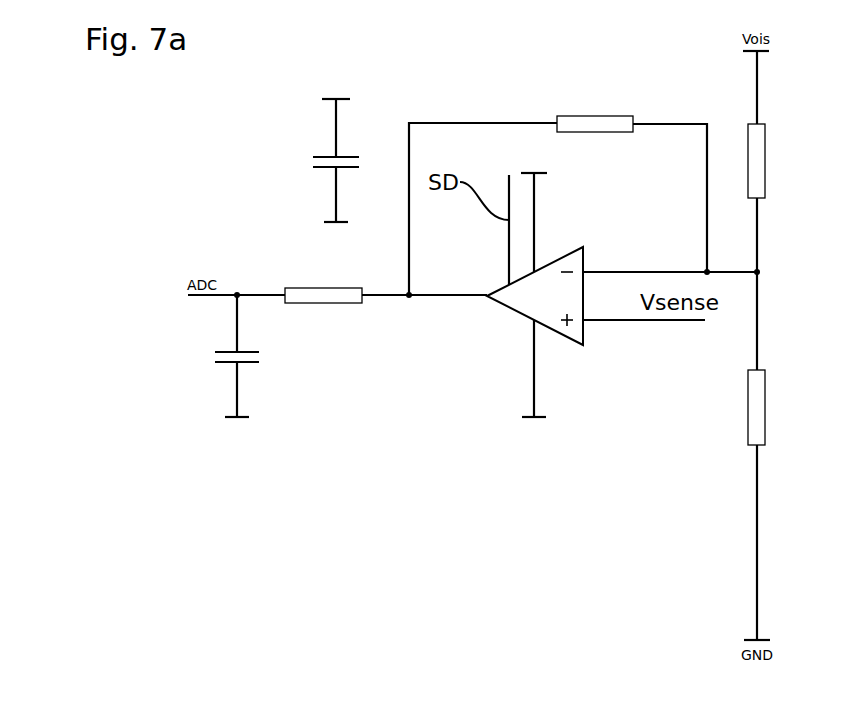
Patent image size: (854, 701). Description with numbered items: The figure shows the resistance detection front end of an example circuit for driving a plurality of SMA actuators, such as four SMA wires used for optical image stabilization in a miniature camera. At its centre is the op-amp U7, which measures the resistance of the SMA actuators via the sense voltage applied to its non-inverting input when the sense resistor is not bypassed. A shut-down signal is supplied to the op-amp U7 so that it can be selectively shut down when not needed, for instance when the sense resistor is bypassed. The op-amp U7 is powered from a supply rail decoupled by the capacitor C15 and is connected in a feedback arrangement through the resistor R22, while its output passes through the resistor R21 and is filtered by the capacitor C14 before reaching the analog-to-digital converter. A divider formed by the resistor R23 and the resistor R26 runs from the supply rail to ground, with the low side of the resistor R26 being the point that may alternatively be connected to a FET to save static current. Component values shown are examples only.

The capacitor C14 1n C14 is at (251, 367).
The capacitor C15 100n C15 is at (353, 162).
The resistor R21 56R R21 is at (323, 297).
The feedback resistor R22 2K7 R22 is at (558, 195).
The resistor R23 180R R23 is at (776, 161).
The resistor R26 is at (728, 407).
The op-amp U7 is at (544, 297).